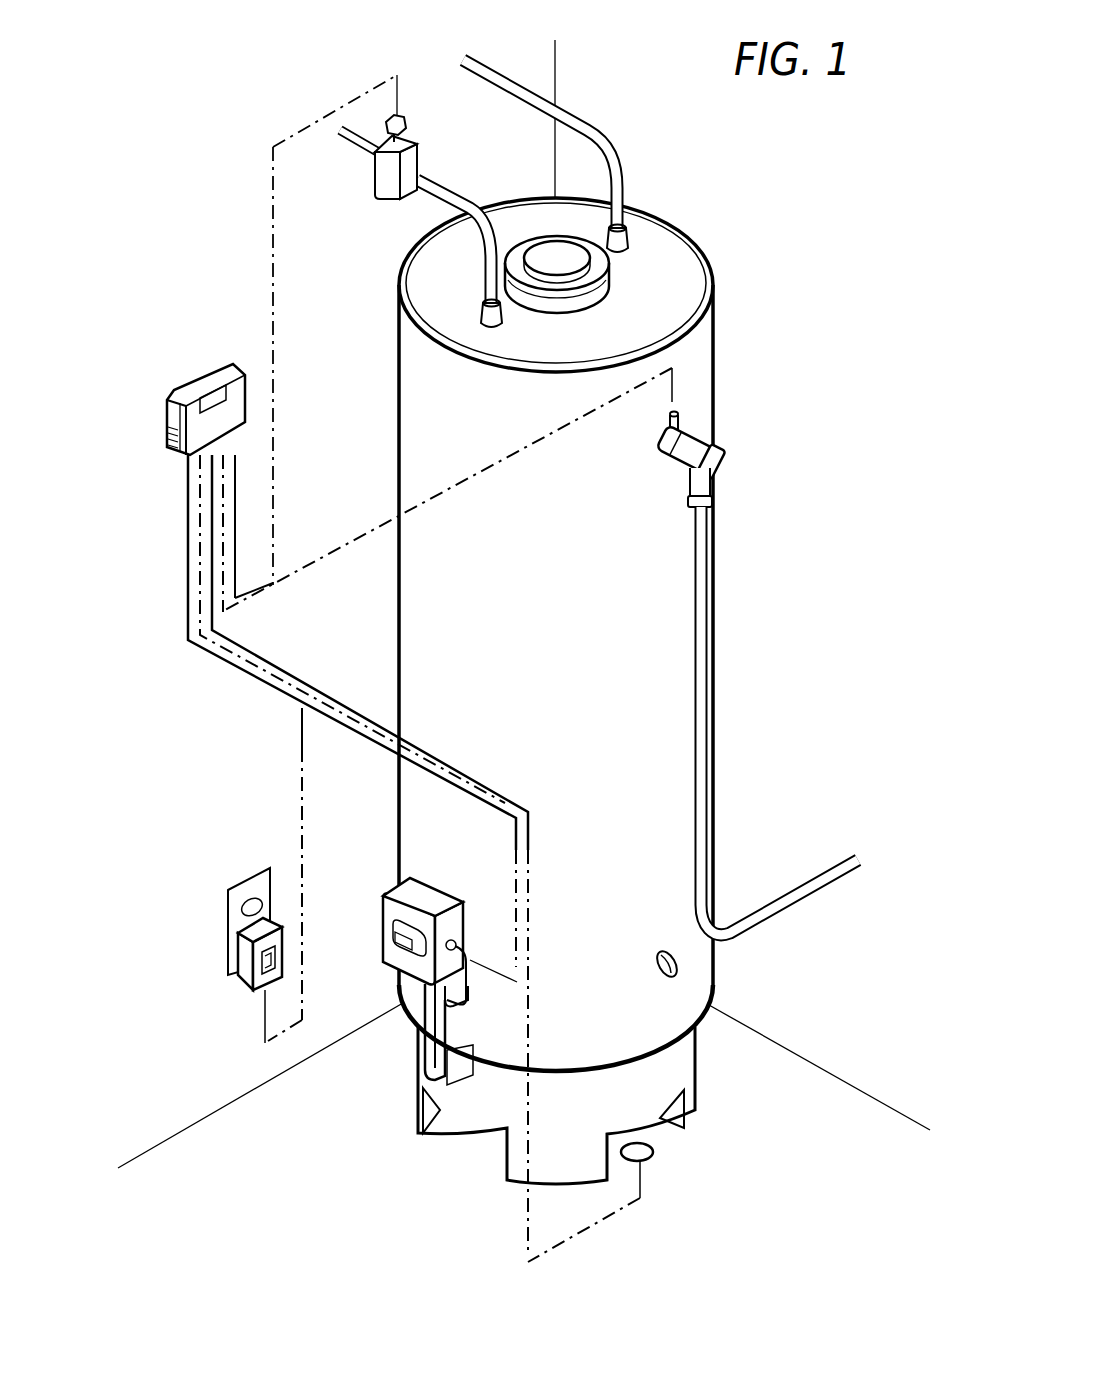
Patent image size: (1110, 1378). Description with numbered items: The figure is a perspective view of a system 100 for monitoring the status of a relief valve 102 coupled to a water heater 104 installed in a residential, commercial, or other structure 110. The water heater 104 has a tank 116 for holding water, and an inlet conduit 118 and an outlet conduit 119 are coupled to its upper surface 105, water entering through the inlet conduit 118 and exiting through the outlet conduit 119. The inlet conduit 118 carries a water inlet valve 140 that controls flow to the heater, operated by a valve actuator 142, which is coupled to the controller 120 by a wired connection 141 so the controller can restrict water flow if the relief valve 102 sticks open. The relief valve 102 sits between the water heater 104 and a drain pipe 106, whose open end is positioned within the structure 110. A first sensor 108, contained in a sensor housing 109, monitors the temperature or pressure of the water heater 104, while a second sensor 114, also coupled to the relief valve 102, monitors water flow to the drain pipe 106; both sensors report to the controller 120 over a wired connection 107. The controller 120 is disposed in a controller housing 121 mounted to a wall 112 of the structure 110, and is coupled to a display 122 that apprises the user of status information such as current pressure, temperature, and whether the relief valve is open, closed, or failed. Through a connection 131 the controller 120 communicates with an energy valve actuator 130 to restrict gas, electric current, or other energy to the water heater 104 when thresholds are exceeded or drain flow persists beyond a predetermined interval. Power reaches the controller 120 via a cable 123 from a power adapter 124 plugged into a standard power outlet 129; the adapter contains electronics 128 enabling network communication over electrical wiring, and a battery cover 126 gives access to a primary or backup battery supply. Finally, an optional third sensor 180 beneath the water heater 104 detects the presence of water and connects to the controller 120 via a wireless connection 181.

The system 100 is at (838, 178).
The relief valve 102 is at (720, 470).
The water heater 104 is at (722, 336).
The upper surface 105 is at (667, 275).
The drain pipe 106 is at (826, 875).
The wired connection 107 is at (322, 560).
The first sensor 108 is at (688, 434).
The sensor housing 109 is at (686, 420).
The structure 110 is at (860, 1048).
The wall 112 is at (153, 727).
The second sensor 114 is at (692, 478).
The tank 116 is at (716, 968).
The inlet conduit 118 is at (480, 282).
The outlet conduit 119 is at (636, 240).
The controller 120 is at (176, 396).
The controller housing 121 is at (182, 393).
The display 122 is at (224, 400).
The cable 123 is at (302, 783).
The power adapter 124 is at (213, 978).
The battery cover 126 is at (172, 433).
The electronics 128 is at (266, 962).
The power outlet 129 is at (244, 886).
The energy valve actuator 130 is at (384, 909).
The connection 131 is at (336, 720).
The water inlet valve 140 is at (376, 170).
The wired connection 141 is at (273, 183).
The valve actuator 142 is at (406, 126).
The third sensor 180 is at (655, 1152).
The wireless connection 181 is at (619, 1211).